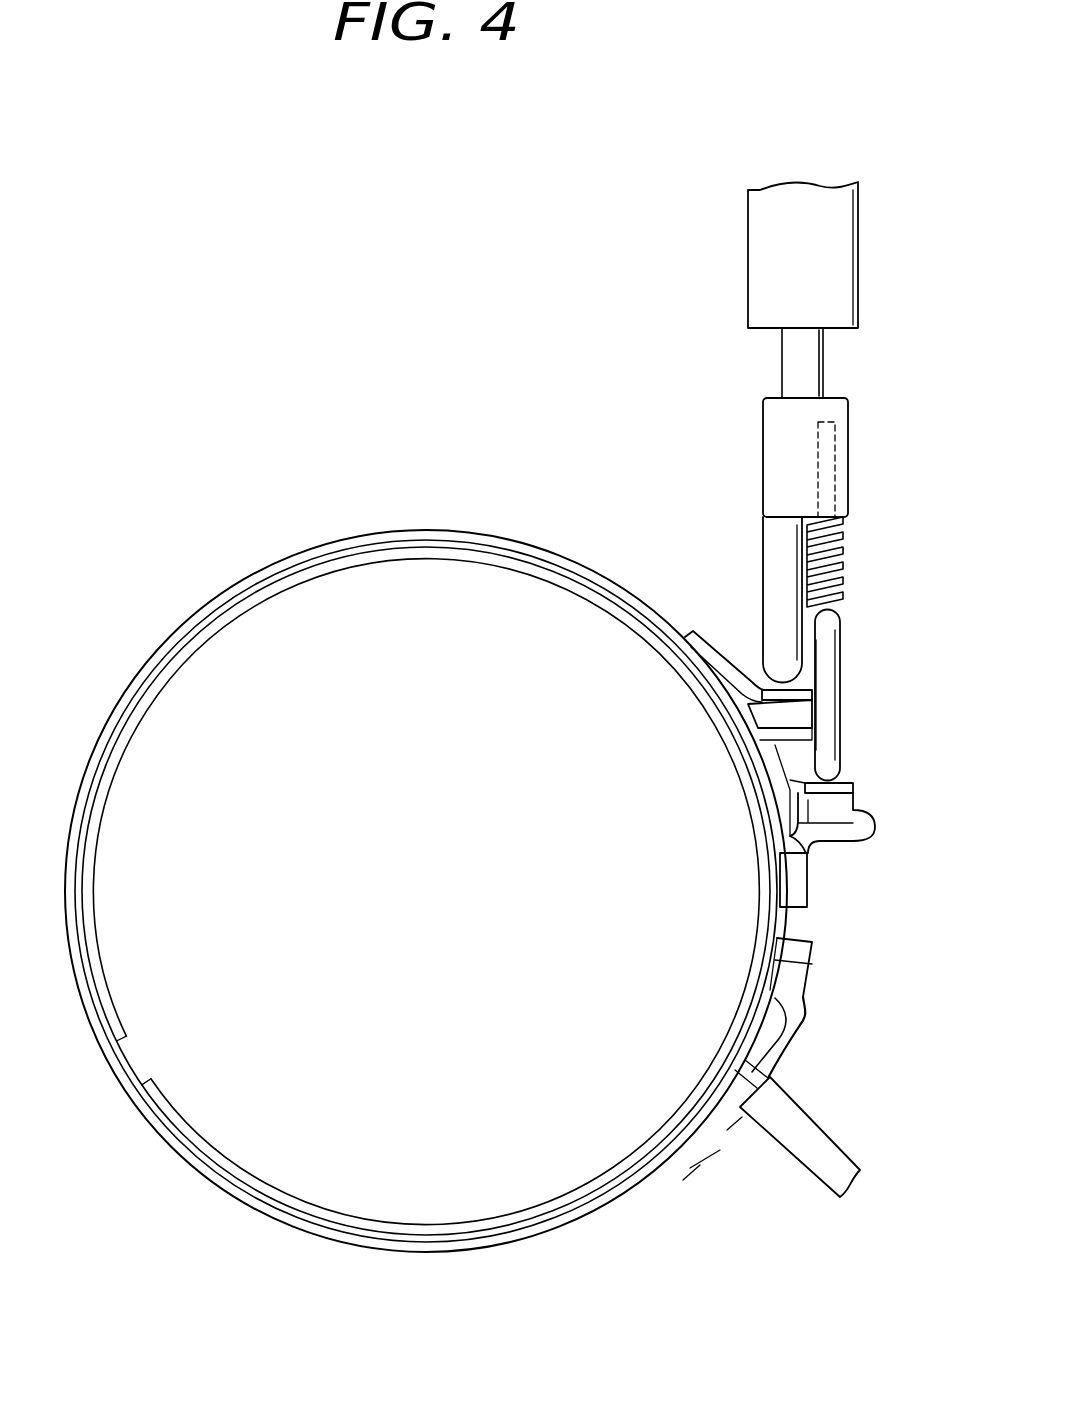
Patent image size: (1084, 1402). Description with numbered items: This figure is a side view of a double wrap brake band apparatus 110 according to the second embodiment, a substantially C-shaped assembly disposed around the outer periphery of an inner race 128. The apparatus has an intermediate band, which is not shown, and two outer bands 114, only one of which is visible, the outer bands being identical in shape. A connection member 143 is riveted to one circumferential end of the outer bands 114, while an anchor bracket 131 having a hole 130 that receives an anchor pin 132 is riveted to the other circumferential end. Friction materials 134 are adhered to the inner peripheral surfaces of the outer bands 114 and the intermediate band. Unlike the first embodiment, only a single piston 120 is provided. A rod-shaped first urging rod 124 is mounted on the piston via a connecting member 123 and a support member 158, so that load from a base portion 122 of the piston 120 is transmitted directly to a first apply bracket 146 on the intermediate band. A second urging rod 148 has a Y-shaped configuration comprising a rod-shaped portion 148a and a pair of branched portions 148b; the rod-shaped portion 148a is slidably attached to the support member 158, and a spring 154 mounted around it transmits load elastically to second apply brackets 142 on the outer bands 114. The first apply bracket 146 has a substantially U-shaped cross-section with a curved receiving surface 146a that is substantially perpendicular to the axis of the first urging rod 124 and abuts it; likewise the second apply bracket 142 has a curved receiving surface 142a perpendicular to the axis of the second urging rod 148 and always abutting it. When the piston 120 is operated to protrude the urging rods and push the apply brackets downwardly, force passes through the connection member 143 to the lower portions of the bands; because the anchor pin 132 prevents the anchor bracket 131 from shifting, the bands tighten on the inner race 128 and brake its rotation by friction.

The double wrap brake band apparatus 110 is at (510, 395).
The outer band 114 is at (350, 543).
The piston 120 is at (812, 172).
The base portion 122 is at (752, 266).
The connecting member 123 is at (822, 358).
The first urging rod 124 is at (768, 560).
The inner race 128 is at (363, 1152).
The hole 130 is at (785, 1064).
The anchor bracket 131 is at (790, 966).
The anchor pin 132 is at (822, 1133).
The friction material 134 is at (217, 1175).
The second apply bracket 142 is at (873, 826).
The receiving surface 142a is at (850, 781).
The connection member 143 is at (805, 886).
The first apply bracket 146 is at (812, 712).
The receiving surface 146a is at (768, 680).
The second urging rod 148 is at (840, 668).
The rod-shaped portion 148a is at (840, 478).
The branched portion 148b is at (832, 630).
The spring 154 is at (838, 548).
The support member 158 is at (845, 412).